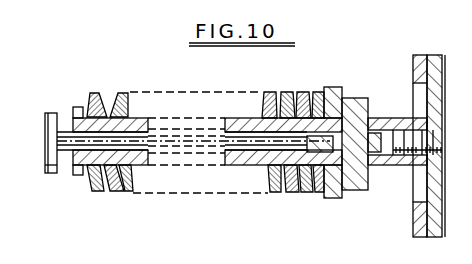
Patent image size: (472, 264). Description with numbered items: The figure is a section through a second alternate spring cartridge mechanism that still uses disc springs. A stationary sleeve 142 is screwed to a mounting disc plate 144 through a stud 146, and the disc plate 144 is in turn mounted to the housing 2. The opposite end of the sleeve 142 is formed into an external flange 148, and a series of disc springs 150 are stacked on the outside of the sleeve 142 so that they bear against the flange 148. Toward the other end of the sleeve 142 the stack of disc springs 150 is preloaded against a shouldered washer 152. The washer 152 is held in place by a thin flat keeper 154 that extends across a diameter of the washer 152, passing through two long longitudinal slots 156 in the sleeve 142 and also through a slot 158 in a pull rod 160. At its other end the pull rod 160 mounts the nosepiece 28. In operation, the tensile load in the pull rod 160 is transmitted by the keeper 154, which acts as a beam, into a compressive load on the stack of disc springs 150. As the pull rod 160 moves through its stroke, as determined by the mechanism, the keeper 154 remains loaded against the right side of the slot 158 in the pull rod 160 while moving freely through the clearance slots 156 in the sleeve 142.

The housing 2 is at (420, 54).
The nosepiece 28 is at (52, 175).
The stationary sleeve 142 is at (372, 166).
The mounting disc plate 144 is at (432, 207).
The stud 146 is at (405, 165).
The external flange 148 is at (75, 112).
The disc springs 150 is at (138, 208).
The shouldered washer 152 is at (325, 88).
The keeper 154 is at (356, 104).
The longitudinal slots 156 is at (277, 120).
The slot 158 is at (338, 142).
The pull rod 160 is at (62, 150).